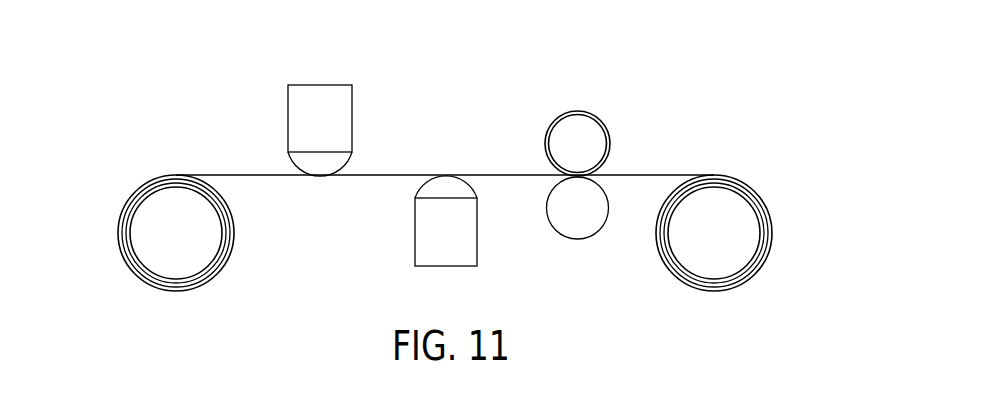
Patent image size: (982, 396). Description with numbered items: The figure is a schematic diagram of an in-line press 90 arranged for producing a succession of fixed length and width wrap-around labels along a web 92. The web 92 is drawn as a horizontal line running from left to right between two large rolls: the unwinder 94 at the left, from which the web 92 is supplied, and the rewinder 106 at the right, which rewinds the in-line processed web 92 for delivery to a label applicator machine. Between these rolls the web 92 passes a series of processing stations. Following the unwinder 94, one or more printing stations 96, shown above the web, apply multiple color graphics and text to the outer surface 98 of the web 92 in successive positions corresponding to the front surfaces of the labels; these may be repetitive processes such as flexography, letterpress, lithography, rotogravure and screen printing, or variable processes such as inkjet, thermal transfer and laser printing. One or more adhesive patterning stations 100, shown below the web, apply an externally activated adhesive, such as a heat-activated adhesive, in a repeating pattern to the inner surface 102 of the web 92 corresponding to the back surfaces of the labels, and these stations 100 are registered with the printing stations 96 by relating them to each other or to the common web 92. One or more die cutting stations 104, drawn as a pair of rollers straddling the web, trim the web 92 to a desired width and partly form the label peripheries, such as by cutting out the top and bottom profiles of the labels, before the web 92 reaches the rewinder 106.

The in-line press 90 is at (181, 103).
The web 92 is at (257, 175).
The unwinder 94 is at (120, 242).
The printing station 96 is at (320, 130).
The outer surface 98 is at (386, 175).
The adhesive patterning station 100 is at (446, 221).
The inner surface 102 is at (531, 177).
The die cutting station 104 is at (577, 111).
The rewinder 106 is at (757, 263).